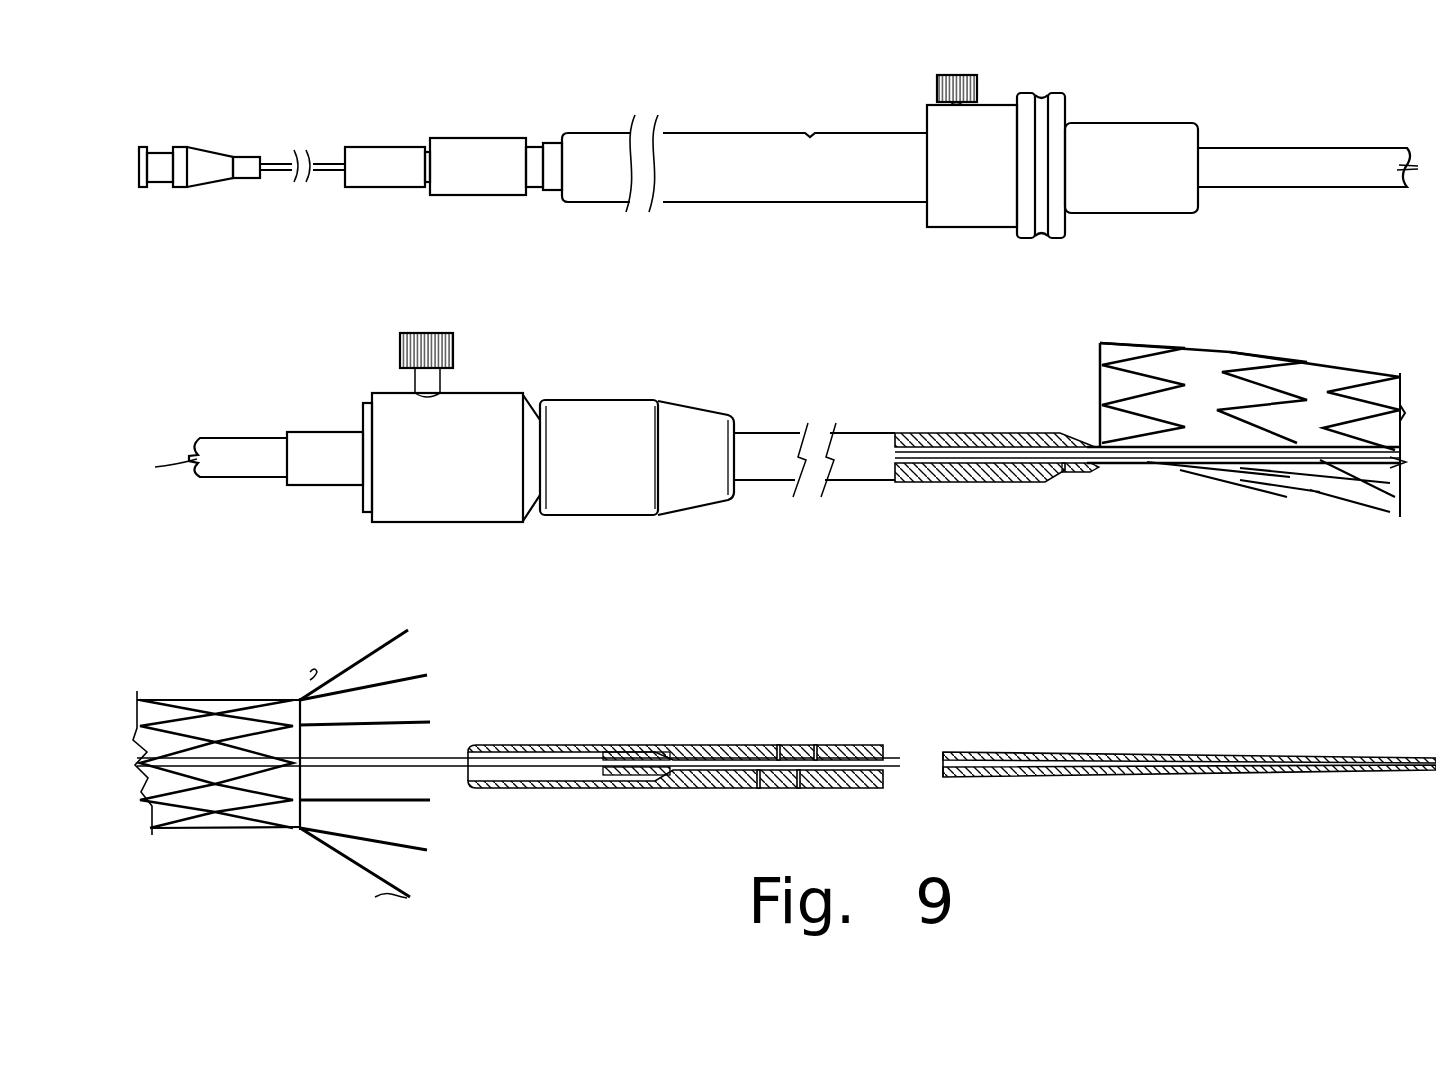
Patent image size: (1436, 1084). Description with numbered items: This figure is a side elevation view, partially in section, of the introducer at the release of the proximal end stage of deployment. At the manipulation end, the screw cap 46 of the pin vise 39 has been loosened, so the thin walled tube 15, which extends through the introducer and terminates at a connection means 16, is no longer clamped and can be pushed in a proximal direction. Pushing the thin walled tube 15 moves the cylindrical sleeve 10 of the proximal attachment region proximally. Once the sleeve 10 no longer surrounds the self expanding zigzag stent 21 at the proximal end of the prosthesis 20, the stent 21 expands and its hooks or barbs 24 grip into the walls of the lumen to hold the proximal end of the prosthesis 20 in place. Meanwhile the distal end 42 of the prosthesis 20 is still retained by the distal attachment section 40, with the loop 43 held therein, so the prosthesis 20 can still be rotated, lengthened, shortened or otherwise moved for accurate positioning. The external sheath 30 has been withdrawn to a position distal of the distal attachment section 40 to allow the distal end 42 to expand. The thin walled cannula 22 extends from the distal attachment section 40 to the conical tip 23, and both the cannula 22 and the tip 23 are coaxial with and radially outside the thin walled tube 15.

The cylindrical sleeve 10 is at (530, 745).
The thin walled tube 15 is at (450, 756).
The connection means 16 is at (209, 176).
The prosthesis 20 is at (1222, 416).
The self expanding zigzag stent 21 is at (360, 660).
The thin walled cannula 22 is at (1307, 472).
The conical tip 23 is at (1375, 373).
The hooks or barbs 24 is at (378, 632).
The sheath 30 is at (858, 473).
The pin vise 39 is at (488, 183).
The distal attachment section 40 is at (1078, 441).
The distal end of the prosthesis 42 is at (1103, 382).
The loop 43 is at (1092, 476).
The screw cap 46 is at (388, 180).